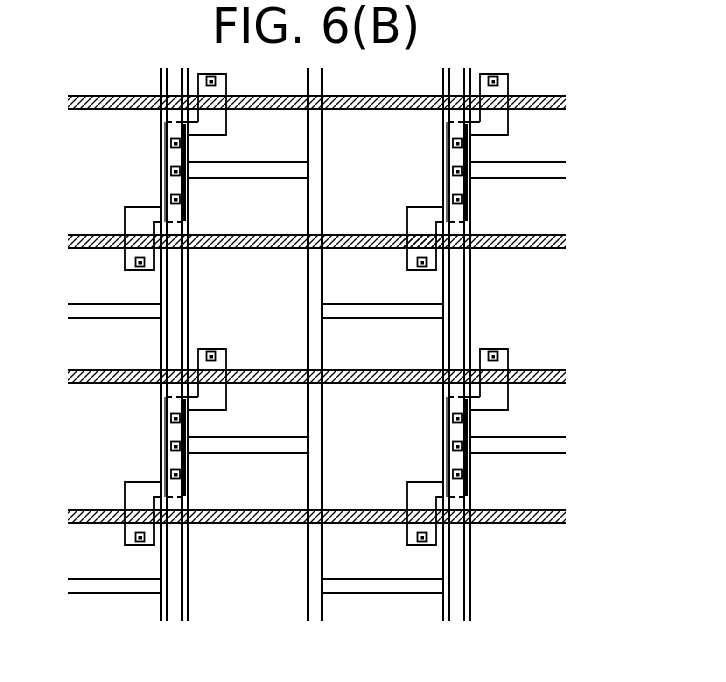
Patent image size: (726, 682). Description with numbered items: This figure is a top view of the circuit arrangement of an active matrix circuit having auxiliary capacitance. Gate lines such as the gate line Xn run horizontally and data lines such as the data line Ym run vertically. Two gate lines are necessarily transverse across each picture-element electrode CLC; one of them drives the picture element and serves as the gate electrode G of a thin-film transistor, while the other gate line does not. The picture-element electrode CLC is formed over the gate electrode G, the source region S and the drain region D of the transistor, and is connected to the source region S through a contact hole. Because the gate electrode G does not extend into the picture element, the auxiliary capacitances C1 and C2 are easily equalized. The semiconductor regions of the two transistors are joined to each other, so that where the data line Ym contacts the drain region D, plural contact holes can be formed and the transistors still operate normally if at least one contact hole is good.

The gate line Xn is at (337, 110).
The data line Ym is at (173, 369).
The auxiliary capacitance C1 is at (222, 250).
The auxiliary capacitance C2 is at (280, 368).
The picture-element electrode CLC is at (257, 424).
The gate electrode G is at (405, 233).
The drain region D is at (423, 220).
The source region S is at (407, 259).